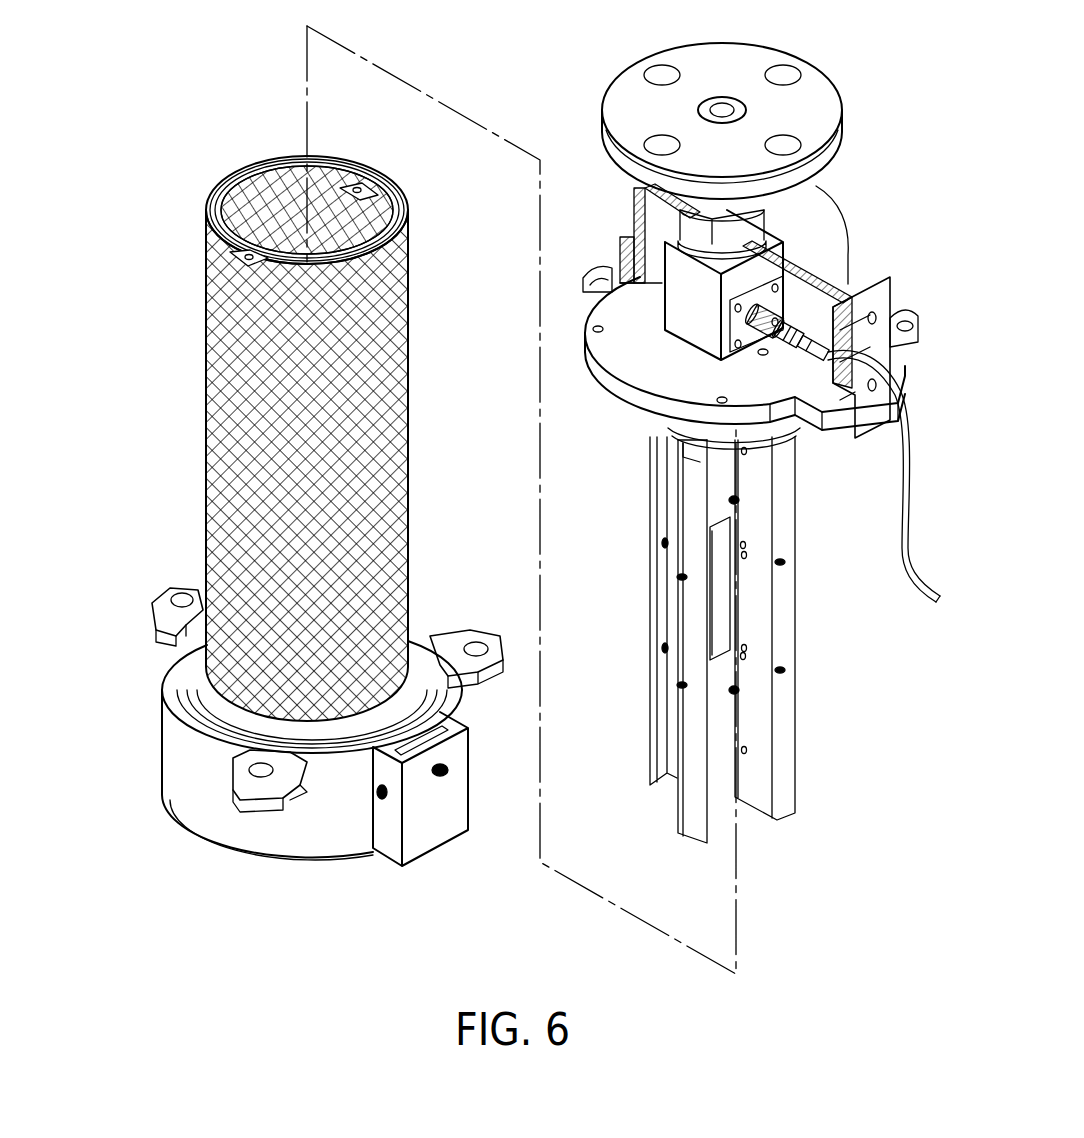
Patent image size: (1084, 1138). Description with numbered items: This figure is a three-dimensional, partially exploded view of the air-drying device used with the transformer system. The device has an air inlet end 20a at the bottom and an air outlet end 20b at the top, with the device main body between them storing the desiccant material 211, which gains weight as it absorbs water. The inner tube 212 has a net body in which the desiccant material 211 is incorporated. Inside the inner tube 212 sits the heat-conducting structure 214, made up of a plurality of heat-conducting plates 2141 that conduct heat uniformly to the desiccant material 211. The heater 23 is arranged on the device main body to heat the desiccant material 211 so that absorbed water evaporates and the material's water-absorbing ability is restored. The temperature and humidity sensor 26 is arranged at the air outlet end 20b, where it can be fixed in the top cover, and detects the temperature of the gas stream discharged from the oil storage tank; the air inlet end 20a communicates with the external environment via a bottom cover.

The air inlet end 20a is at (155, 750).
The air outlet end 20b is at (668, 345).
The desiccant material 211 is at (410, 303).
The inner tube 212 is at (424, 397).
The heat-conducting structure 214 is at (770, 640).
The heat-conducting plate 2141 is at (727, 722).
The heater 23 is at (715, 608).
The temperature and humidity sensor 26 is at (790, 312).